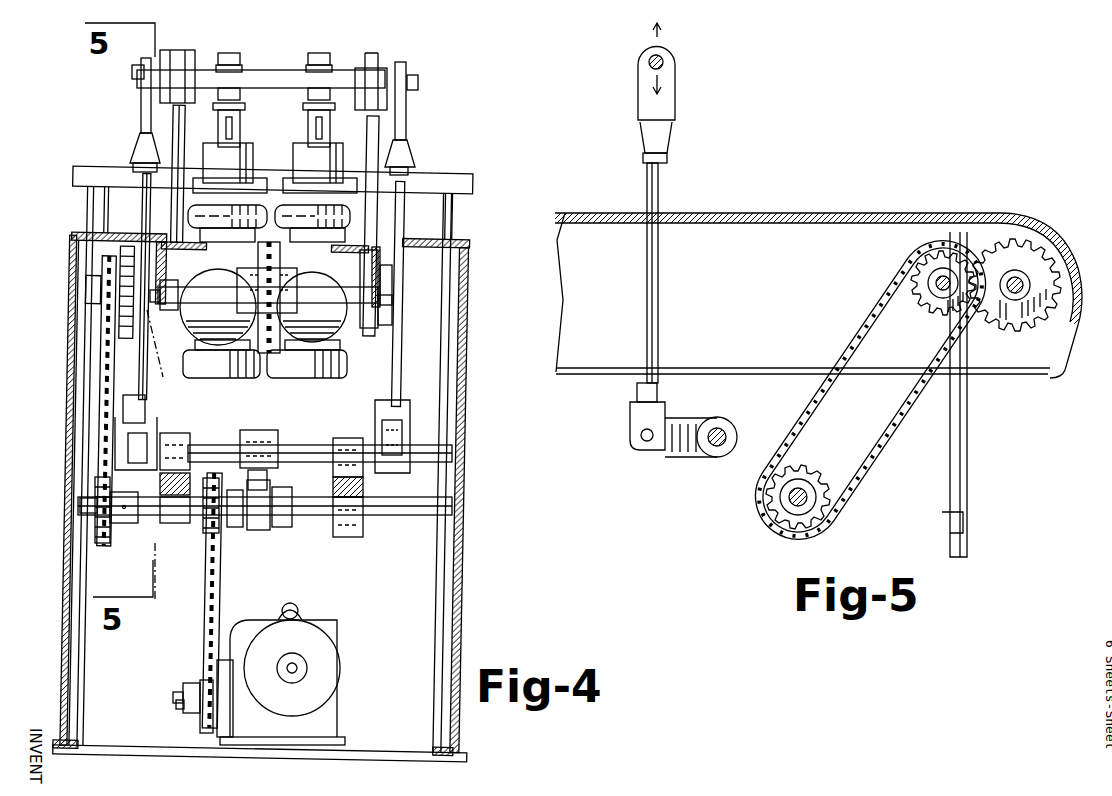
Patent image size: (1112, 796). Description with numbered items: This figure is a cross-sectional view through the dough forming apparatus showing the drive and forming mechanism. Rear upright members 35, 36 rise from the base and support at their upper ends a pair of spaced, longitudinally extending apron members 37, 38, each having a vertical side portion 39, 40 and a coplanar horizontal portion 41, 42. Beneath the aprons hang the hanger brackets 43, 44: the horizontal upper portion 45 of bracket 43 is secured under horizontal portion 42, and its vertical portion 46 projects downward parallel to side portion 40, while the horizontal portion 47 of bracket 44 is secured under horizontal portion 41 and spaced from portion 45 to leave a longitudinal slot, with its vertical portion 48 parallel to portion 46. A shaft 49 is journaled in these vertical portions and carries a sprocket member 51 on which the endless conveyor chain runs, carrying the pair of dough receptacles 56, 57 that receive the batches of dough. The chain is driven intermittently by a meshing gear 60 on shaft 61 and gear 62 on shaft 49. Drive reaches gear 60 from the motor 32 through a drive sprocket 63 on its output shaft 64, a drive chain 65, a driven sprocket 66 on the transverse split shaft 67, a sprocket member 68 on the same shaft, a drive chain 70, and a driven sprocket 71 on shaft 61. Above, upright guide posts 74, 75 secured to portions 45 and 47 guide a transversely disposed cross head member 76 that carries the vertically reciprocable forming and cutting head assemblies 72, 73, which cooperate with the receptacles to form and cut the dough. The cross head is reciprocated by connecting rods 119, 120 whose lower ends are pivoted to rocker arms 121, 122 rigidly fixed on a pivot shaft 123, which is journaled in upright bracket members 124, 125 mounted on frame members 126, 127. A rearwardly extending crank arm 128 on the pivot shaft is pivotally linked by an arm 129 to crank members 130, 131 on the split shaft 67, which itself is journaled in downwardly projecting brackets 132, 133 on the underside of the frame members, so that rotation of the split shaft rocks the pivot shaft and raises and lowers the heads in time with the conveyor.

In FIG. 4, the motor 32 is at (330, 668).
In FIG. 4, the rearwardly disposed upright member 35 is at (78, 668).
In FIG. 5, the rearwardly disposed upright member 35 is at (968, 450).
In FIG. 4, the rearwardly disposed upright member 36 is at (447, 590).
In FIG. 4, the apron member 37 is at (476, 324).
In FIG. 4, the apron member 38 is at (56, 346).
In FIG. 4, the vertical side portion 39 is at (468, 287).
In FIG. 4, the vertical side portion 40 is at (70, 300).
In FIG. 5, the vertical side portion 40 is at (1012, 370).
In FIG. 4, the horizontal portion 41 is at (456, 230).
In FIG. 4, the horizontal portion 42 is at (96, 215).
In FIG. 5, the horizontal portion 42 is at (854, 213).
In FIG. 4, the hanger bracket 43 is at (178, 272).
In FIG. 4, the hanger bracket 44 is at (385, 283).
In FIG. 4, the horizontal upper portion 45 is at (180, 232).
In FIG. 4, the vertical portion 46 is at (163, 306).
In FIG. 4, the horizontal portion 47 is at (322, 250).
In FIG. 4, the vertical portion 48 is at (382, 330).
In FIG. 4, the shaft 49 is at (340, 330).
In FIG. 5, the shaft 49 is at (1028, 285).
In FIG. 4, the sprocket member 51 is at (266, 370).
In FIG. 4, the dough receptacle 56 is at (226, 229).
In FIG. 4, the dough receptacle 57 is at (300, 230).
In FIG. 5, the gear 60 is at (925, 310).
In FIG. 5, the shaft 61 is at (935, 283).
In FIG. 5, the gear 62 is at (1010, 318).
In FIG. 4, the drive sprocket 63 is at (204, 668).
In FIG. 4, the output shaft 64 is at (185, 702).
In FIG. 4, the drive chain 65 is at (219, 601).
In FIG. 4, the driven sprocket 66 is at (220, 543).
In FIG. 4, the split shaft 67 is at (143, 526).
In FIG. 5, the split shaft 67 is at (790, 507).
In FIG. 4, the sprocket member 68 is at (100, 533).
In FIG. 5, the sprocket member 68 is at (836, 512).
In FIG. 4, the drive chain 70 is at (100, 405).
In FIG. 5, the drive chain 70 is at (862, 358).
In FIG. 4, the driven sprocket 71 is at (95, 273).
In FIG. 4, the forming and cutting head assembly 72 is at (249, 131).
In FIG. 4, the forming and cutting head assembly 73 is at (330, 127).
In FIG. 4, the upright guide post 74 is at (172, 117).
In FIG. 4, the upright guide post 75 is at (380, 126).
In FIG. 4, the cross head member 76 is at (265, 72).
In FIG. 4, the connecting rod 119 is at (143, 391).
In FIG. 5, the connecting rod 119 is at (660, 200).
In FIG. 4, the connecting rod 120 is at (400, 372).
In FIG. 4, the rocker arm 121 is at (146, 467).
In FIG. 5, the rocker arm 121 is at (672, 455).
In FIG. 4, the rocker arm 122 is at (386, 475).
In FIG. 4, the pivot shaft 123 is at (305, 450).
In FIG. 4, the upright bracket member 124 is at (181, 442).
In FIG. 4, the upright bracket member 125 is at (349, 432).
In FIG. 4, the frame member 126 is at (163, 548).
In FIG. 4, the frame member 127 is at (333, 489).
In FIG. 4, the crank arm 128 is at (283, 435).
In FIG. 4, the arm 129 is at (264, 481).
In FIG. 4, the crank member 130 is at (254, 531).
In FIG. 4, the crank member 131 is at (287, 530).
In FIG. 4, the downwardly projecting bracket 132 is at (175, 516).
In FIG. 4, the downwardly projecting bracket 133 is at (345, 536).